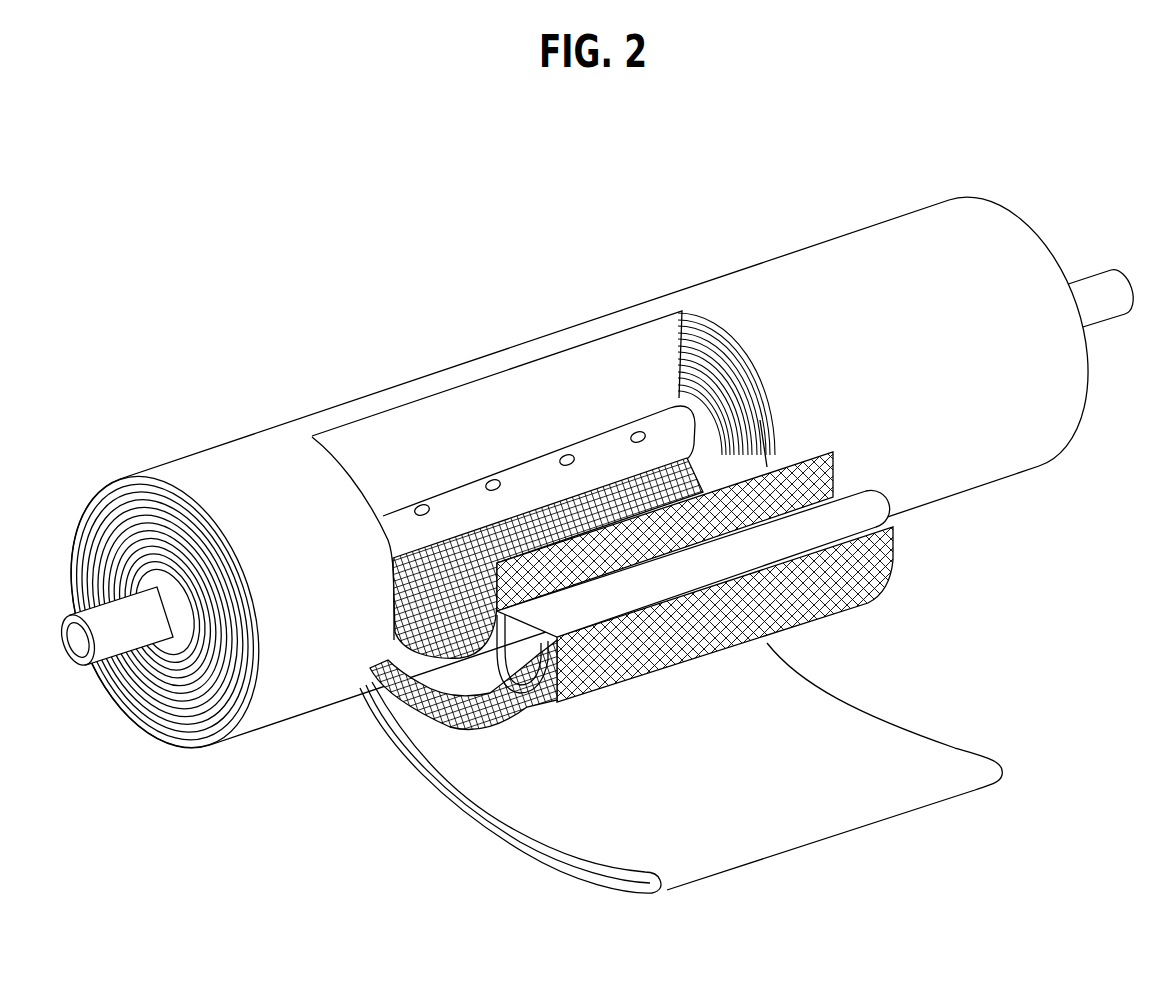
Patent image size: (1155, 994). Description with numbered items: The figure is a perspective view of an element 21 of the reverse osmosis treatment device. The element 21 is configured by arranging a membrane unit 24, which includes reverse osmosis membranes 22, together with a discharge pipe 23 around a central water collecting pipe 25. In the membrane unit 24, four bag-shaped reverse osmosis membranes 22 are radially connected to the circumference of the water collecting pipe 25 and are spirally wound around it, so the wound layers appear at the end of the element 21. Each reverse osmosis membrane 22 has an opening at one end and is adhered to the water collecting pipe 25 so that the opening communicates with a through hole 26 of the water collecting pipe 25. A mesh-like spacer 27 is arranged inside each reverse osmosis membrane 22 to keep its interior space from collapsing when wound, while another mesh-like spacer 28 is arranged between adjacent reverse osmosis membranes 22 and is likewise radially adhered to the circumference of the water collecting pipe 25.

The element 21 is at (720, 253).
The reverse osmosis membrane 22 is at (908, 750).
The discharge pipe 23 is at (1097, 280).
The membrane unit 24 is at (286, 453).
The water collecting pipe 25 is at (537, 478).
The through hole 26 is at (566, 455).
The mesh-like spacer 27 is at (848, 496).
The mesh-like spacer 28 is at (814, 453).